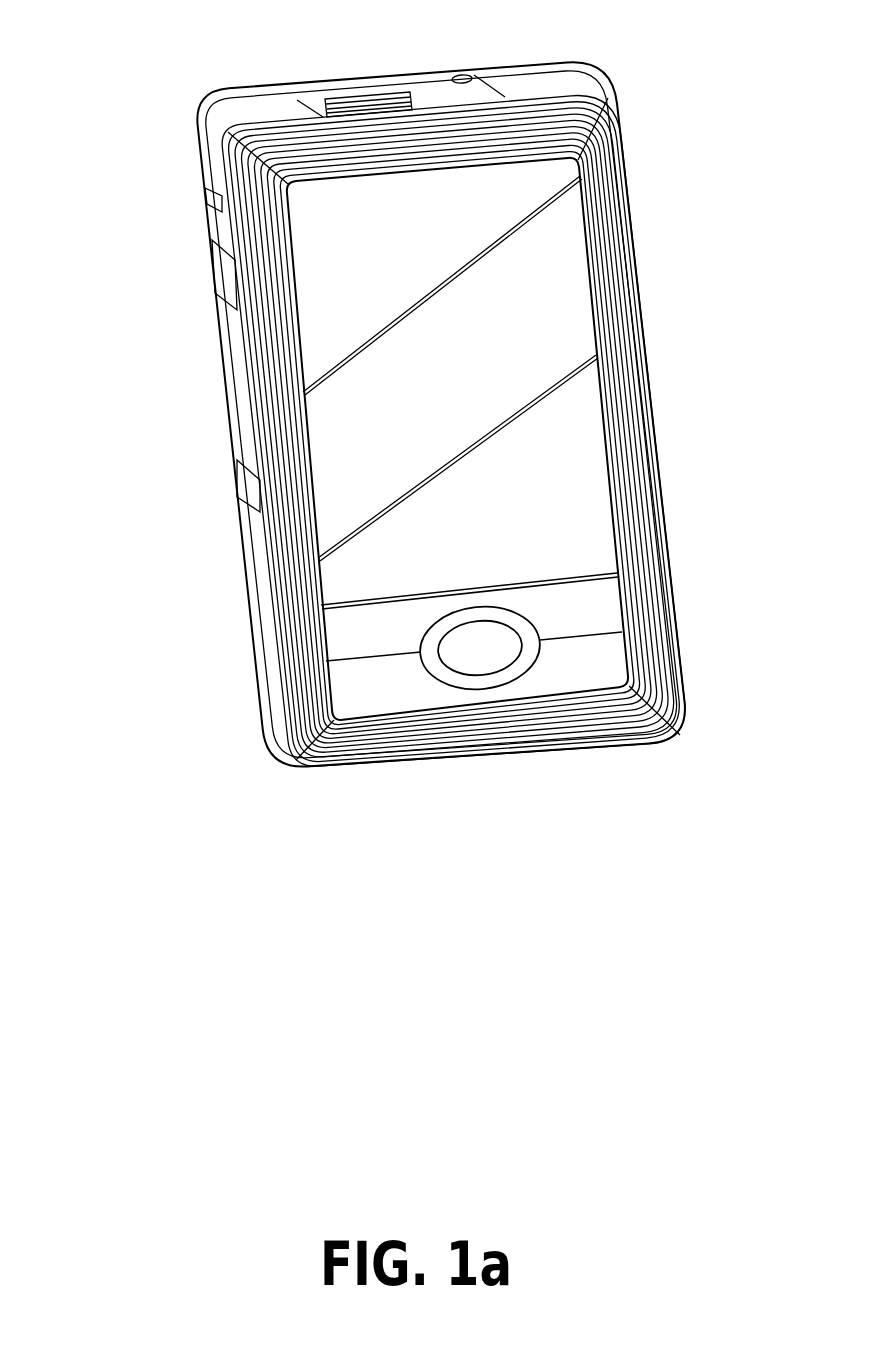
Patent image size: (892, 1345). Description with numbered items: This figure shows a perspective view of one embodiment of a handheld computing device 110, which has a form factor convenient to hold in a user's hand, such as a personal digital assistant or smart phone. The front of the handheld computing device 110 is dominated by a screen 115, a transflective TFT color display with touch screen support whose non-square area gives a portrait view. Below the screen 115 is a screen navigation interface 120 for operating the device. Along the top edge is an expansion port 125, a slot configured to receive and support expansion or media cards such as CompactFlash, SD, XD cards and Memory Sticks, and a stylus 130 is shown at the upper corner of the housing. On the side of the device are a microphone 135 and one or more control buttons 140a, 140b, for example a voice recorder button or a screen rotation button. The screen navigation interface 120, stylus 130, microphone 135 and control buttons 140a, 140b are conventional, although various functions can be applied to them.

The handheld computing device 110 is at (712, 805).
The screen 115 is at (588, 268).
The screen navigation interface 120 is at (468, 689).
The expansion port 125 is at (388, 78).
The stylus 130 is at (561, 72).
The microphone 135 is at (217, 207).
The control button 140a is at (220, 270).
The control button 140b is at (247, 480).